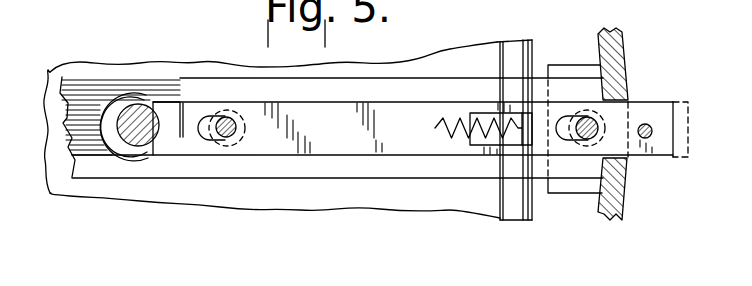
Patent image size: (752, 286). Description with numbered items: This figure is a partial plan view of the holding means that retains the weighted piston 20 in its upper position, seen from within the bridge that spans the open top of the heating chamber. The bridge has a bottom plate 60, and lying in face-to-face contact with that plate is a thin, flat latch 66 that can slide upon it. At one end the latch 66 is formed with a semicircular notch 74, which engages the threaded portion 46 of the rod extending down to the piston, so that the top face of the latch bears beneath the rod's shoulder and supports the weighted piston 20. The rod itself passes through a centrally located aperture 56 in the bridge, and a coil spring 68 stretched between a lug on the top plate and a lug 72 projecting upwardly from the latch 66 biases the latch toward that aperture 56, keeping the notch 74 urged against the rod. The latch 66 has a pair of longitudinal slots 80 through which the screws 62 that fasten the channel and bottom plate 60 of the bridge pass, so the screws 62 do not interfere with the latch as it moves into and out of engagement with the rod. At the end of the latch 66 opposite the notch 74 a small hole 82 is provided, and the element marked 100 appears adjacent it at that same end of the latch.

The weighted piston 20 is at (392, 200).
The threaded portion 46 is at (137, 135).
The aperture 56 is at (125, 92).
The bottom plate 60 is at (82, 93).
The screws 62 is at (233, 137).
The latch 66 is at (413, 141).
The coil spring 68 is at (492, 127).
The lug 72 is at (538, 122).
The semicircular notch 74 is at (156, 104).
The longitudinal slots 80 is at (209, 140).
The small hole 82 is at (645, 126).
The pin 100 is at (650, 127).